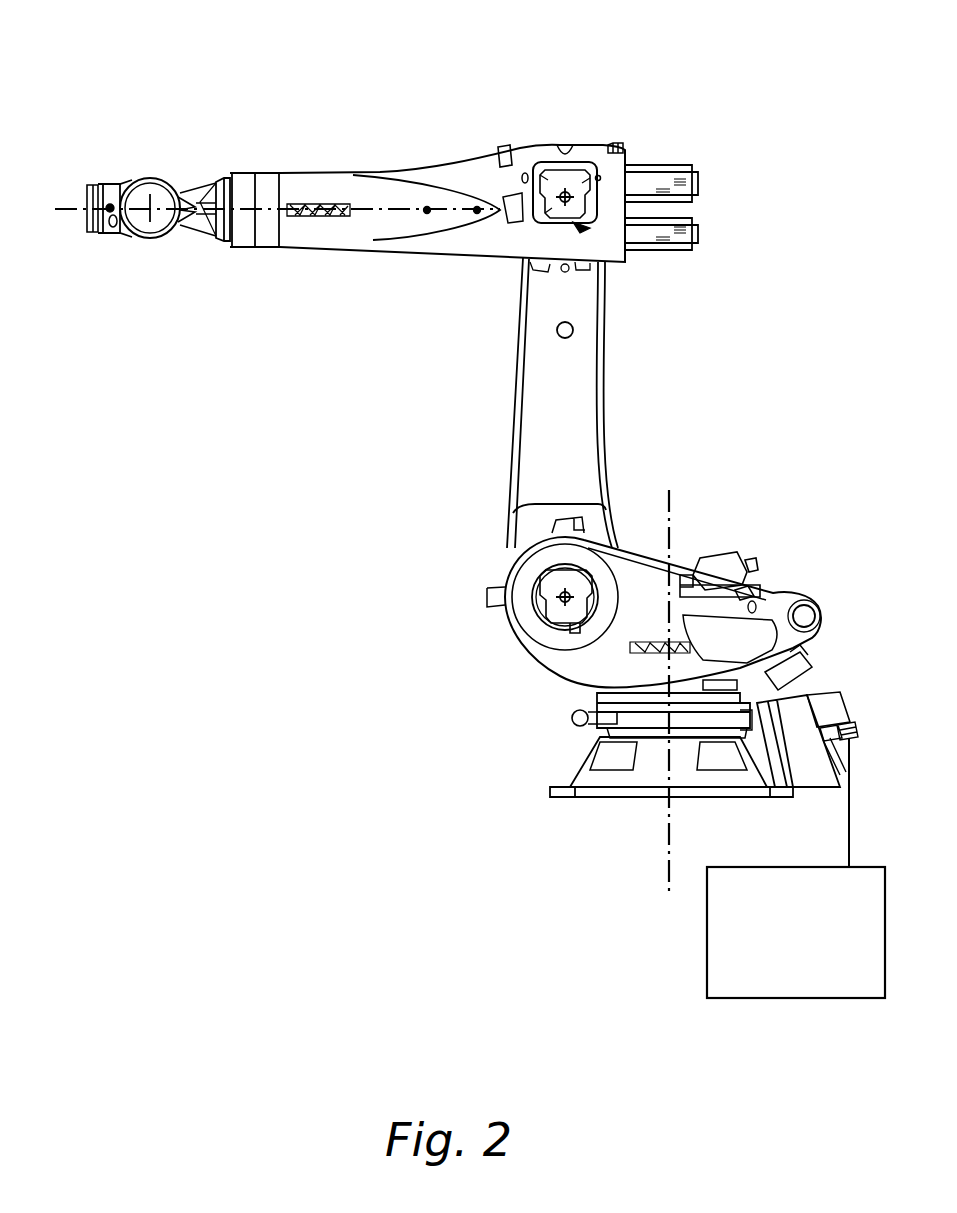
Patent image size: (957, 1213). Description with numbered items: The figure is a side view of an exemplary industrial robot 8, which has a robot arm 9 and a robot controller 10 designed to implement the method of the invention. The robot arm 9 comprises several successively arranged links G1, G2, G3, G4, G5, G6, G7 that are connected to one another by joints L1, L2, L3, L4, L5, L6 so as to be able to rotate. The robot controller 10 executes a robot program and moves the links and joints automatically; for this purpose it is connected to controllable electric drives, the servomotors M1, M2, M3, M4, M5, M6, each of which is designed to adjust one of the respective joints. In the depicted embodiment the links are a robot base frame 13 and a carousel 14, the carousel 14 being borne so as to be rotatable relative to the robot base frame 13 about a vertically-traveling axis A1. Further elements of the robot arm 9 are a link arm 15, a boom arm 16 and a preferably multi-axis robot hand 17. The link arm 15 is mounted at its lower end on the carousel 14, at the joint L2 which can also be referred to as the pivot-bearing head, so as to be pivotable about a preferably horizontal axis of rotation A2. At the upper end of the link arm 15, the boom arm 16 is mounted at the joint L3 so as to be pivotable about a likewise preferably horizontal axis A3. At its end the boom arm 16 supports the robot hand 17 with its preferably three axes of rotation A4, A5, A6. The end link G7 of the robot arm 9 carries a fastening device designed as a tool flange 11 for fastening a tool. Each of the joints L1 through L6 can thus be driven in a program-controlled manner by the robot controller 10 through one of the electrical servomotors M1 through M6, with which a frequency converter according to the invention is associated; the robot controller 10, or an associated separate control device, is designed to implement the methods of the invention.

The industrial robot 8 is at (767, 173).
The robot arm 9 is at (594, 409).
The robot controller 10 is at (733, 957).
The tool flange 11 is at (86, 208).
The robot base frame 13 is at (597, 777).
The carousel 14 is at (733, 570).
The link arm 15 is at (548, 428).
The boom arm 16 is at (310, 183).
The robot hand 17 is at (205, 203).
The vertically-traveling axis A1 is at (670, 843).
The axis of rotation A2 is at (568, 595).
The axis A3 is at (570, 200).
The axis of rotation A4 is at (443, 210).
The axis of rotation A5 is at (150, 208).
The axis of rotation A6 is at (73, 210).
The link G1 is at (626, 810).
The link G2 is at (777, 542).
The link G3 is at (466, 429).
The link G4 is at (452, 175).
The link G5 is at (256, 139).
The link G6 is at (110, 187).
The end link G7 is at (83, 178).
The joint L1 is at (607, 695).
The joint L2 is at (506, 556).
The joint L3 is at (613, 262).
The joint L4 is at (227, 238).
The joint L5 is at (152, 214).
The joint L6 is at (92, 232).
The servomotor M1 is at (733, 593).
The servomotor M2 is at (553, 600).
The servomotor M3 is at (540, 203).
The servomotor M4 is at (578, 229).
The servomotor M5 is at (688, 167).
The servomotor M6 is at (662, 166).